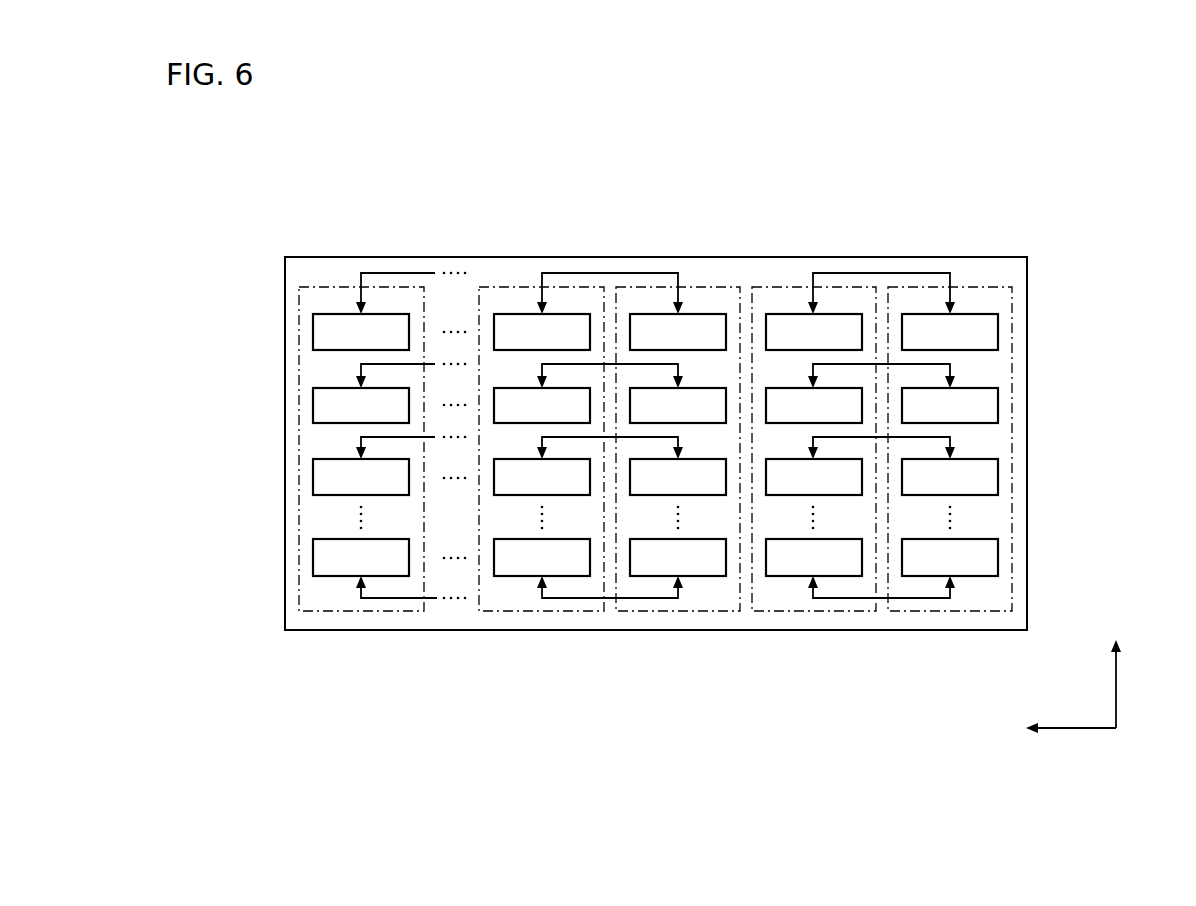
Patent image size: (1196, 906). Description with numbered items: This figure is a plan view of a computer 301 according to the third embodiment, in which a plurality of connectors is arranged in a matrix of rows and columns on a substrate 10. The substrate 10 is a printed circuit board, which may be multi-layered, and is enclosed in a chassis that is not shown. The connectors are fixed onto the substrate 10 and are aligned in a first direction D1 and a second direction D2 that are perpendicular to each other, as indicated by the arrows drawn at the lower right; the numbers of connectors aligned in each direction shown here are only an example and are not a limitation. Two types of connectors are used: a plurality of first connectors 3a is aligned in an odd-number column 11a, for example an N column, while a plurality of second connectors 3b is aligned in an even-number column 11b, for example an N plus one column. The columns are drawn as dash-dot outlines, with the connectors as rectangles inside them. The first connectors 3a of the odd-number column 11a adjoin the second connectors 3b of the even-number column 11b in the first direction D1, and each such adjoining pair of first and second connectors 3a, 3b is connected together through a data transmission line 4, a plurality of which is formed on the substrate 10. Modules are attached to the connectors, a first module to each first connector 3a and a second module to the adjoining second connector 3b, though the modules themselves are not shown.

The computer 301 is at (992, 174).
The substrate 10 is at (1000, 258).
The odd-number column 11a is at (643, 287).
The even-number column 11b is at (305, 287).
The first connector 3a is at (690, 403).
The second connector 3b is at (337, 330).
The data transmission line 4 is at (398, 273).
The first direction D1 is at (1076, 730).
The second direction D2 is at (1118, 684).